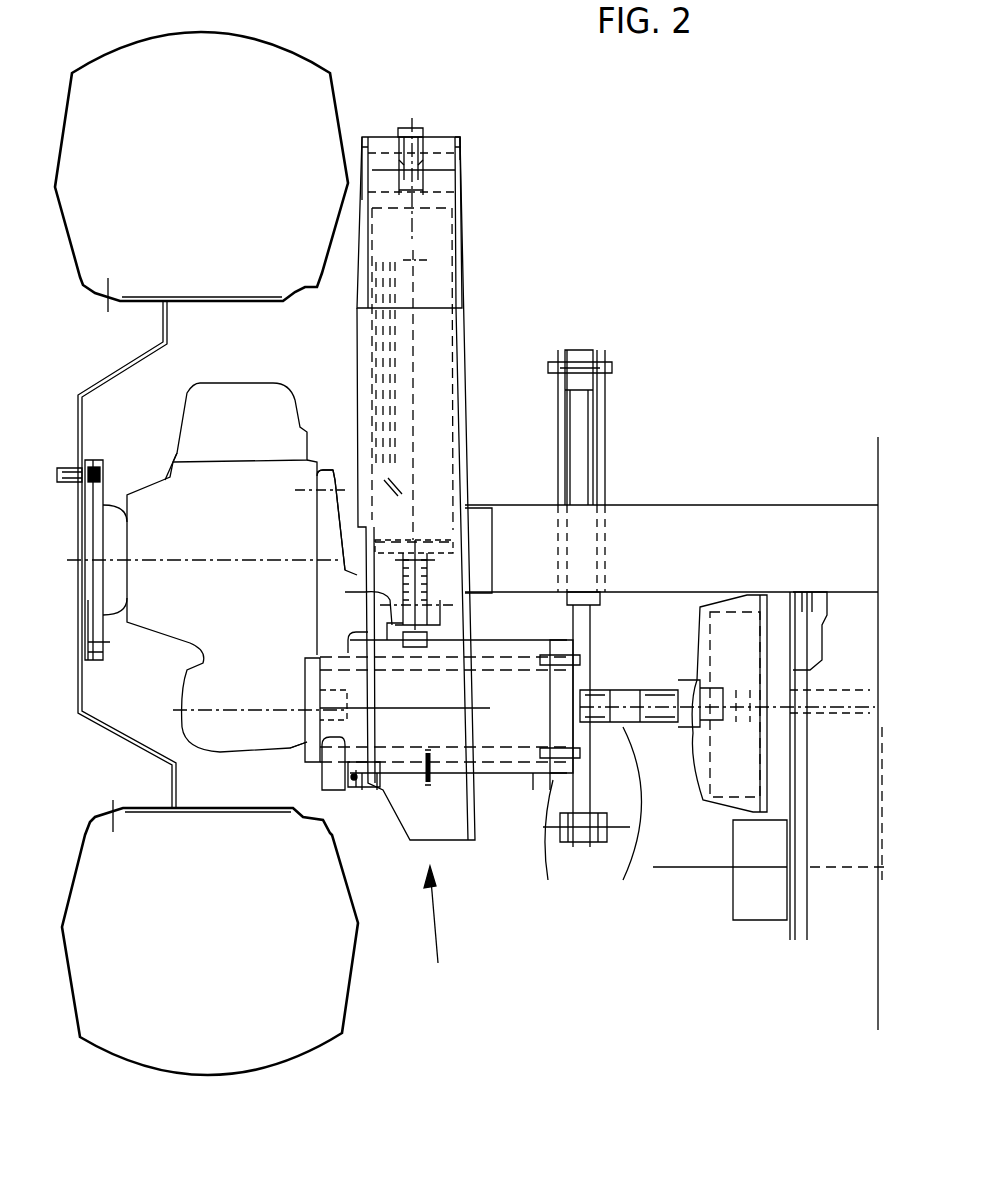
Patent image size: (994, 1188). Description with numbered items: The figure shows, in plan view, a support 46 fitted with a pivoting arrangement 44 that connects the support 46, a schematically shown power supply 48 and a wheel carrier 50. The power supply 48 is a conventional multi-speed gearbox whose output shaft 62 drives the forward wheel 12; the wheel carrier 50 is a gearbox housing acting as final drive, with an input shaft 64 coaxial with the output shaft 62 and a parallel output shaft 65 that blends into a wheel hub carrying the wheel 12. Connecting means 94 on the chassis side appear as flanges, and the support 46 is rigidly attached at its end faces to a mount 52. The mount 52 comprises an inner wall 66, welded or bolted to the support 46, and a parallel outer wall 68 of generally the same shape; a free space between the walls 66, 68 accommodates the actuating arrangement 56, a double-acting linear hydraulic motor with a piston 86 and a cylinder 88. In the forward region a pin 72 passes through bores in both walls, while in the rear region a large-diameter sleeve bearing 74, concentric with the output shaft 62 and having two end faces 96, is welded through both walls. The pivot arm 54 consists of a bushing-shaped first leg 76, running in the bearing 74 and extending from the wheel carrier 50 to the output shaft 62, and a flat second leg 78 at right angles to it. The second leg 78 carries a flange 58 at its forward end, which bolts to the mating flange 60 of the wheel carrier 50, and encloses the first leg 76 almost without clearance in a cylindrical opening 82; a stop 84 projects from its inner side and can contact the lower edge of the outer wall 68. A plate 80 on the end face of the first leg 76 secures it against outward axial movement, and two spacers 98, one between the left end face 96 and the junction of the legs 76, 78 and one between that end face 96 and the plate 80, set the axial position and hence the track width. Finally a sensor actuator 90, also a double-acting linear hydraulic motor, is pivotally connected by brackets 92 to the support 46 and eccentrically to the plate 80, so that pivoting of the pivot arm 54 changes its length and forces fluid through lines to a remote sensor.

The wheel 12 is at (219, 134).
The pivoting arrangement 44 is at (438, 935).
The support 46 is at (737, 505).
The power supply 48 is at (793, 933).
The wheel carrier 50 is at (200, 423).
The mount 52 is at (461, 296).
The pivot arm 54 is at (335, 752).
The actuating arrangement 56 is at (414, 150).
The flange 58 is at (333, 480).
The mating flange 60 is at (320, 472).
The output shaft 62 is at (632, 724).
The input shaft 64 is at (305, 690).
The output shaft 65 is at (73, 612).
The inner wall 66 is at (466, 352).
The outer wall 68 is at (357, 175).
The pin 72 is at (452, 160).
The bearing 74 is at (515, 775).
The first leg 76 is at (307, 750).
The second leg 78 is at (320, 531).
The plate 80 is at (577, 672).
The cylindrical opening 82 is at (353, 778).
The stop 84 is at (365, 593).
The piston 86 is at (425, 578).
The cylinder 88 is at (441, 222).
The sensor actuator 90 is at (590, 450).
The brackets 92 is at (602, 358).
The connecting means 94 is at (482, 508).
The end faces 96 is at (377, 780).
The spacers 98 is at (362, 790).